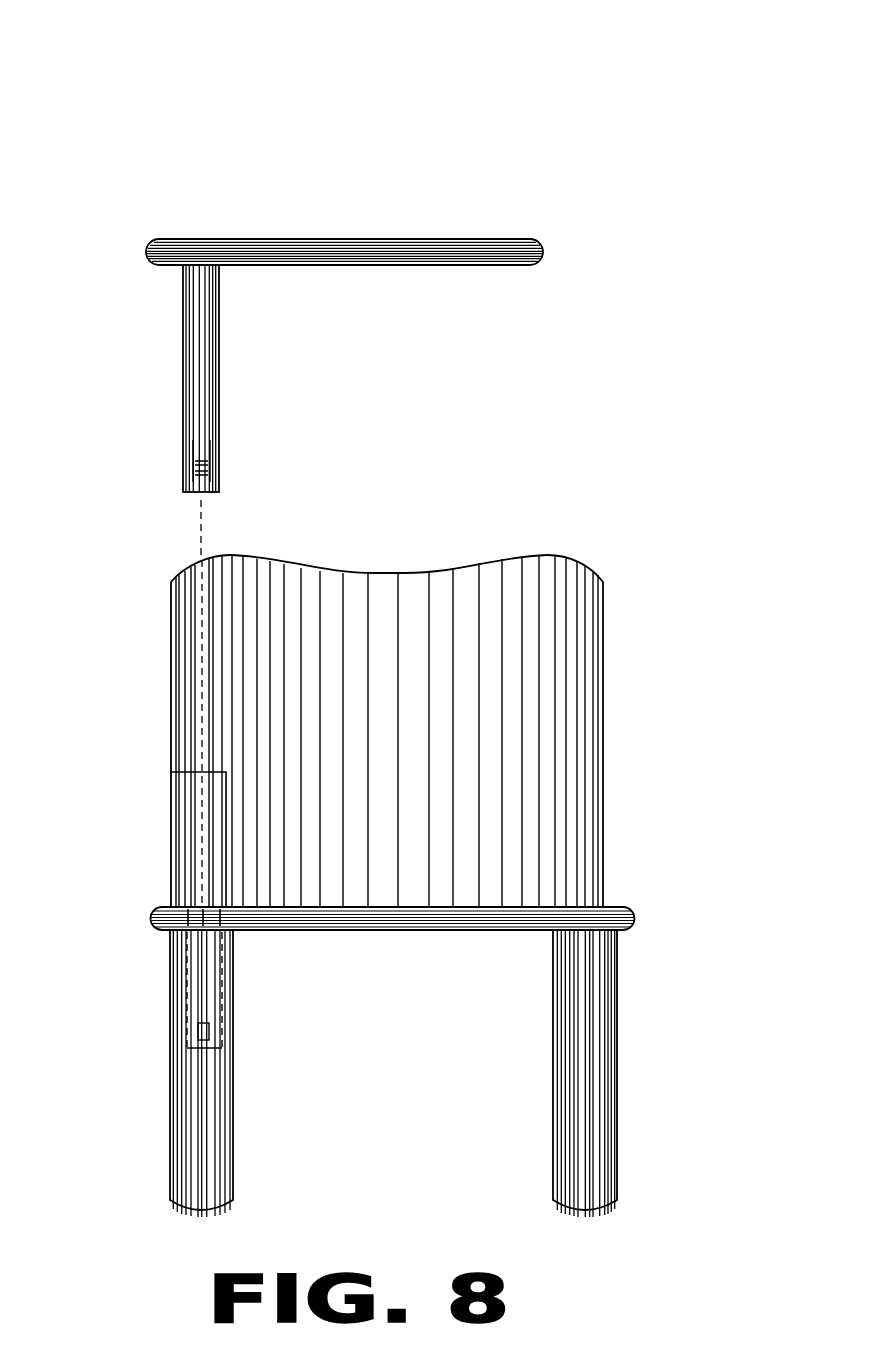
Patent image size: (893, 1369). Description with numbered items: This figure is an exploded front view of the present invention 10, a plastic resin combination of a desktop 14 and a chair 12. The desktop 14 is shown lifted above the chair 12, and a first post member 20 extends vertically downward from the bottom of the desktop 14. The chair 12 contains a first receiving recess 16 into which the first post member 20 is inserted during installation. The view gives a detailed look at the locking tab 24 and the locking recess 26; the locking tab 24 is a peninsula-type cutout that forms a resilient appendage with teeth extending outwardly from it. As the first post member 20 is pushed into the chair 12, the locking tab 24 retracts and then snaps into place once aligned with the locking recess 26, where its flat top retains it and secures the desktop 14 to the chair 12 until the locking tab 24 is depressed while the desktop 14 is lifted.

The present invention 10 is at (515, 160).
The chair 12 is at (402, 930).
The desktop 14 is at (352, 240).
The first receiving recess 16 is at (196, 912).
The first post member 20 is at (212, 372).
The locking tab 24 is at (197, 472).
The locking recess 26 is at (196, 1030).